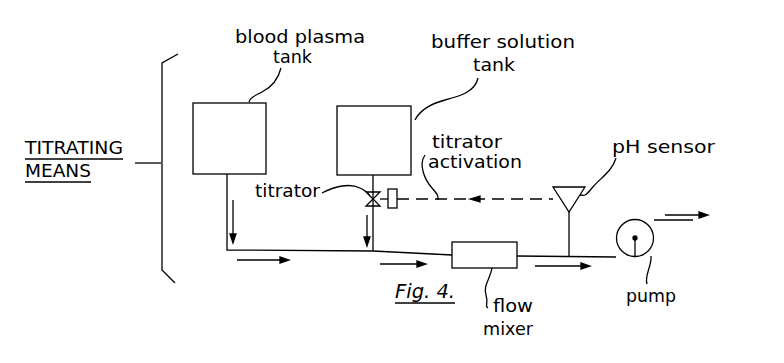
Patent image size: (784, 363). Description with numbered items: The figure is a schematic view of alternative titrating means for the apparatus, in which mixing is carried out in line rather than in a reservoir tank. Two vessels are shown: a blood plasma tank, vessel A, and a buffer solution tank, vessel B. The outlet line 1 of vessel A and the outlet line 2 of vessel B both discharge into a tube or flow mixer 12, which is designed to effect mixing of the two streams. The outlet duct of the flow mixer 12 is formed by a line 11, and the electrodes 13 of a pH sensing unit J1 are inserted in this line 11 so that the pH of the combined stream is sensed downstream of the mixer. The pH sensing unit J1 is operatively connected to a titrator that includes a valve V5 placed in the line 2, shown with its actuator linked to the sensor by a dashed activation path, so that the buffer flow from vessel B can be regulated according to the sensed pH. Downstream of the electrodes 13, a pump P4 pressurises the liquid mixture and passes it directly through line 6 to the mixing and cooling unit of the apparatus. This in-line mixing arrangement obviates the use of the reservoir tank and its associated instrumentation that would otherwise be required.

The vessel A is at (218, 112).
The vessel B is at (367, 112).
The outlet line 1 is at (226, 203).
The outlet line 2 is at (376, 236).
The valve V5 is at (368, 201).
The flow mixer 12 is at (480, 252).
The electrodes 13 is at (569, 229).
The pH sensing unit J1 is at (567, 192).
The pump P4 is at (626, 229).
The line 11 is at (601, 258).
The line 6 is at (670, 222).